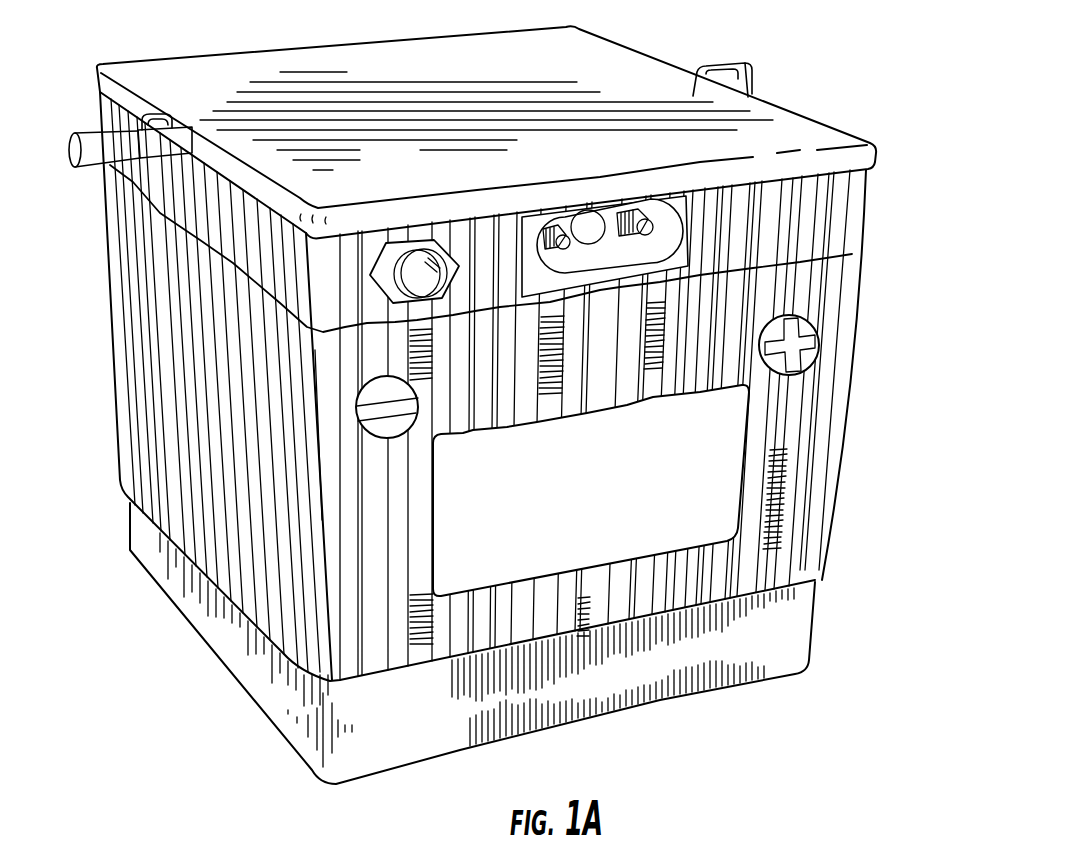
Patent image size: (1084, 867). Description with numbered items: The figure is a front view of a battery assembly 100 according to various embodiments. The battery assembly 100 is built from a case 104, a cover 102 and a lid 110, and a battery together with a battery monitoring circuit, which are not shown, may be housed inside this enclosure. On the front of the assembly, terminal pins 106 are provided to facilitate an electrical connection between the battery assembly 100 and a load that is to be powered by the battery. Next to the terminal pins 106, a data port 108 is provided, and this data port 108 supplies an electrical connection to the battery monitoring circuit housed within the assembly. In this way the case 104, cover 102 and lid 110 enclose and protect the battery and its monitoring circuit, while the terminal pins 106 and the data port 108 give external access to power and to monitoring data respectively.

The battery assembly 100 is at (503, 392).
The cover 102 is at (862, 217).
The case 104 is at (850, 317).
The terminal pins 106 is at (560, 280).
The data port 108 is at (425, 297).
The lid 110 is at (798, 108).